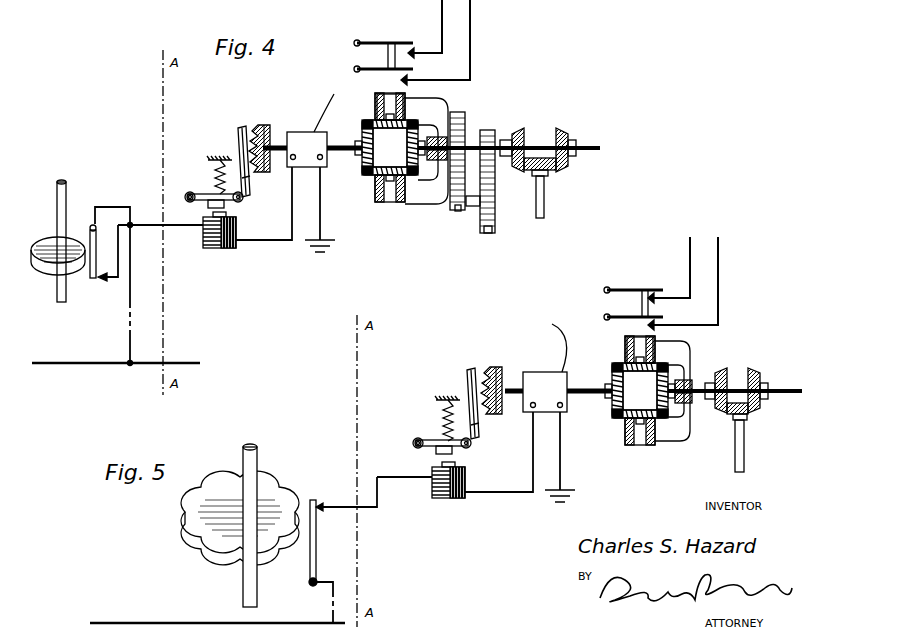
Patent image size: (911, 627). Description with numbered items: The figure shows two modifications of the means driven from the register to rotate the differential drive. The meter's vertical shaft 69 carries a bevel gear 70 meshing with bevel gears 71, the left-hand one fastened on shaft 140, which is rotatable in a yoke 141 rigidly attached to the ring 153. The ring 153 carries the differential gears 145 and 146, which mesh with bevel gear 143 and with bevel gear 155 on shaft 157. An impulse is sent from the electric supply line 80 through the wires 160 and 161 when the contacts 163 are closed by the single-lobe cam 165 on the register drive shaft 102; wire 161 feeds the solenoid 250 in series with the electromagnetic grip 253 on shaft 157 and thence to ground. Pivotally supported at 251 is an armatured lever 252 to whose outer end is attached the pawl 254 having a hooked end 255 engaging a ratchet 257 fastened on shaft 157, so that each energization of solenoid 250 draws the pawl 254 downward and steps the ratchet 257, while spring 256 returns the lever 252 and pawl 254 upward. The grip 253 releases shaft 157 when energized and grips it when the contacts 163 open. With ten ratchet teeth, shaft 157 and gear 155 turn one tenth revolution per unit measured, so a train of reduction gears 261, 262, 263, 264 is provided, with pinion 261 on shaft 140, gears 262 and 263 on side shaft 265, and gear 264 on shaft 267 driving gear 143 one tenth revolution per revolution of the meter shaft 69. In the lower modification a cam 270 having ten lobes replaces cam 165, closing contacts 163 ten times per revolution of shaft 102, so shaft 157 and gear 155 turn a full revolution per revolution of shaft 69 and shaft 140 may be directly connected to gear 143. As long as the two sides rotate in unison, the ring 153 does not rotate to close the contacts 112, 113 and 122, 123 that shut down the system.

In FIG. 4, the vertical shaft 69 is at (545, 203).
In FIG. 5, the vertical shaft 69 is at (745, 452).
In FIG. 4, the bevel gear 70 is at (560, 171).
In FIG. 5, the bevel gear 70 is at (758, 410).
In FIG. 4, the bevel gears 71 is at (566, 131).
In FIG. 5, the bevel gears 71 is at (730, 372).
In FIG. 4, the electric supply line 80 is at (52, 366).
In FIG. 5, the electric supply line 80 is at (230, 612).
In FIG. 4, the vertical shaft 102 is at (57, 286).
In FIG. 5, the vertical shaft 102 is at (243, 580).
In FIG. 4, the contacts 112 is at (368, 40).
In FIG. 5, the contacts 112 is at (618, 287).
In FIG. 4, the contacts 113 is at (418, 45).
In FIG. 5, the contacts 113 is at (668, 290).
In FIG. 4, the contacts 122 is at (357, 66).
In FIG. 5, the contacts 122 is at (607, 314).
In FIG. 4, the contacts 123 is at (414, 82).
In FIG. 5, the contacts 123 is at (662, 325).
In FIG. 4, the shaft 140 is at (520, 146).
In FIG. 5, the shaft 140 is at (706, 402).
In FIG. 4, the yoke 141 is at (425, 205).
In FIG. 4, the bevel gear 143 is at (448, 206).
In FIG. 5, the bevel gear 143 is at (690, 376).
In FIG. 4, the bevel gear 145 is at (440, 135).
In FIG. 5, the bevel gear 145 is at (672, 360).
In FIG. 4, the bevel gear 146 is at (377, 181).
In FIG. 5, the bevel gear 146 is at (628, 437).
In FIG. 4, the ring 153 is at (376, 201).
In FIG. 5, the ring 153 is at (622, 338).
In FIG. 4, the bevel gear 155 is at (366, 163).
In FIG. 5, the bevel gear 155 is at (616, 408).
In FIG. 4, the shaft 157 is at (340, 142).
In FIG. 5, the shaft 157 is at (590, 385).
In FIG. 4, the wire 160 is at (128, 325).
In FIG. 5, the wire 160 is at (330, 595).
In FIG. 4, the wire 161 is at (181, 233).
In FIG. 5, the wire 161 is at (380, 509).
In FIG. 4, the contacts 163 is at (100, 290).
In FIG. 5, the contacts 163 is at (318, 498).
In FIG. 4, the cam 165 is at (48, 241).
In FIG. 4, the solenoid 250 is at (218, 250).
In FIG. 5, the solenoid 250 is at (450, 500).
In FIG. 4, the pivot 251 is at (190, 191).
In FIG. 5, the pivot 251 is at (413, 442).
In FIG. 4, the armatured lever 252 is at (196, 201).
In FIG. 5, the armatured lever 252 is at (446, 430).
In FIG. 4, the electromagnetic grip 253 is at (310, 131).
In FIG. 5, the electromagnetic grip 253 is at (560, 372).
In FIG. 4, the pawl 254 is at (252, 179).
In FIG. 5, the pawl 254 is at (480, 428).
In FIG. 4, the hooked end 255 is at (244, 126).
In FIG. 5, the hooked end 255 is at (470, 368).
In FIG. 4, the spring 256 is at (217, 160).
In FIG. 5, the spring 256 is at (445, 408).
In FIG. 4, the ratchet 257 is at (272, 125).
In FIG. 5, the ratchet 257 is at (490, 367).
In FIG. 4, the pinion 261 is at (528, 134).
In FIG. 4, the gear 262 is at (490, 234).
In FIG. 4, the gear 263 is at (460, 212).
In FIG. 4, the gear 264 is at (495, 136).
In FIG. 4, the side shaft 265 is at (494, 214).
In FIG. 4, the shaft 267 is at (466, 126).
In FIG. 5, the cam 270 is at (192, 518).